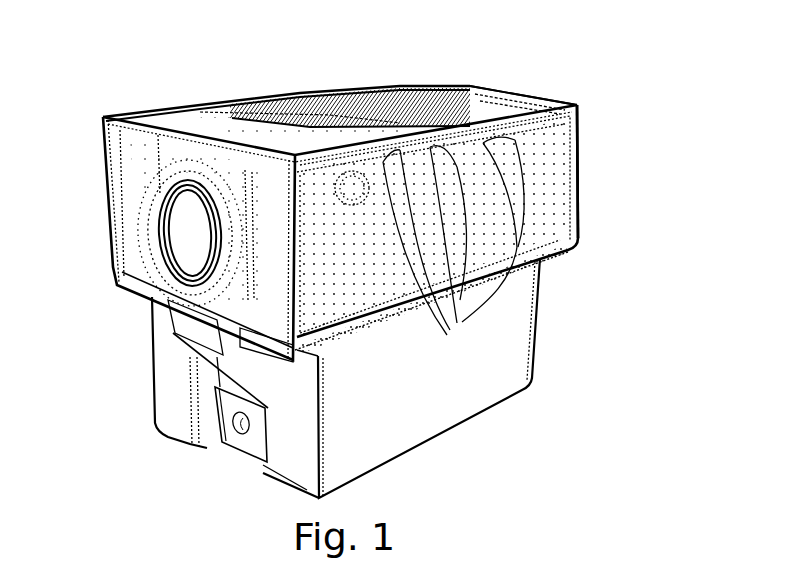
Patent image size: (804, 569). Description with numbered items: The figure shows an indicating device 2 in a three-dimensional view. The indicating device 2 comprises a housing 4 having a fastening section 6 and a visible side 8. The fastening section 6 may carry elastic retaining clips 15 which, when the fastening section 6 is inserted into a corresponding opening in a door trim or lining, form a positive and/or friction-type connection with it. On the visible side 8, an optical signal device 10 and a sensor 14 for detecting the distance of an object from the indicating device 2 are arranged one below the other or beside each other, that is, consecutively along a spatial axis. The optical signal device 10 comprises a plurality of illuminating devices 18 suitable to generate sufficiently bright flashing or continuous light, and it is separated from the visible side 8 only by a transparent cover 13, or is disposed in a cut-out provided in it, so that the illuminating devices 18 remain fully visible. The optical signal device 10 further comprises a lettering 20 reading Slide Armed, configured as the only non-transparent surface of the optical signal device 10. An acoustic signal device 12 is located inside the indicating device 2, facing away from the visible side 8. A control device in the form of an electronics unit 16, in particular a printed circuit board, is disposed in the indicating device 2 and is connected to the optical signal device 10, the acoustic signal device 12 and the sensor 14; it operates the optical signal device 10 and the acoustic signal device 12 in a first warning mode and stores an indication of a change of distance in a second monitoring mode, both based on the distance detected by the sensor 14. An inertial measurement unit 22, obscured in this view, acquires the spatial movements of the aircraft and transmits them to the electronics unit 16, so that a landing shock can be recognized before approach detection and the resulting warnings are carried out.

The indicating device 2 is at (401, 88).
The housing 4 is at (520, 290).
The fastening section 6 is at (545, 345).
The visible side 8 is at (588, 167).
The optical signal device 10 is at (457, 107).
The acoustic signal device 12 is at (240, 120).
The transparent cover 13 is at (577, 138).
The sensor 14 is at (192, 232).
The elastic retaining clips 15 is at (210, 352).
The electronics unit 16 is at (323, 273).
The illuminating devices 18 is at (347, 90).
The lettering 20 is at (293, 103).
The inertial measurement unit 22 is at (540, 195).